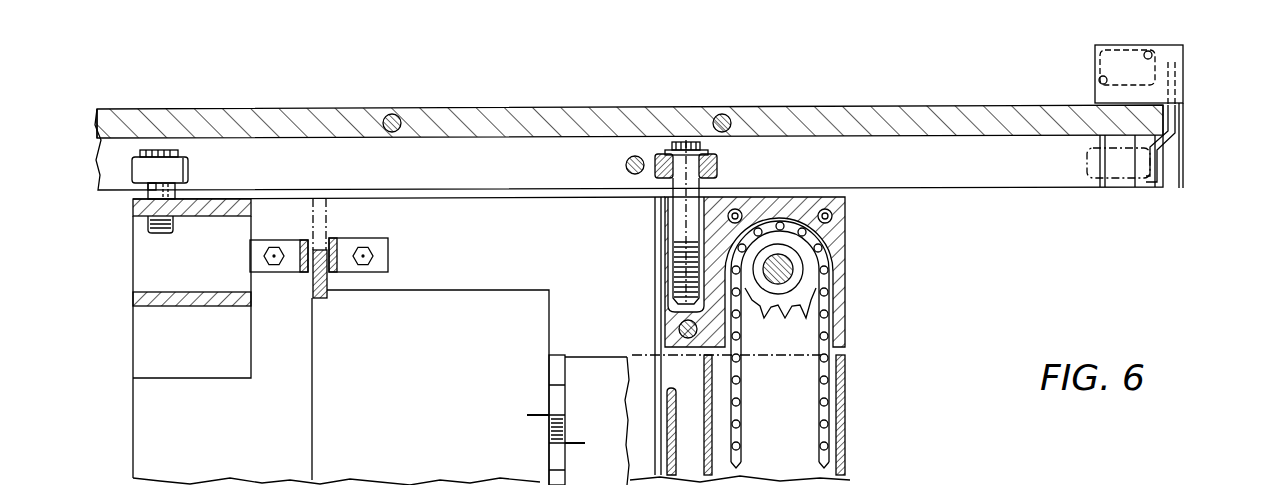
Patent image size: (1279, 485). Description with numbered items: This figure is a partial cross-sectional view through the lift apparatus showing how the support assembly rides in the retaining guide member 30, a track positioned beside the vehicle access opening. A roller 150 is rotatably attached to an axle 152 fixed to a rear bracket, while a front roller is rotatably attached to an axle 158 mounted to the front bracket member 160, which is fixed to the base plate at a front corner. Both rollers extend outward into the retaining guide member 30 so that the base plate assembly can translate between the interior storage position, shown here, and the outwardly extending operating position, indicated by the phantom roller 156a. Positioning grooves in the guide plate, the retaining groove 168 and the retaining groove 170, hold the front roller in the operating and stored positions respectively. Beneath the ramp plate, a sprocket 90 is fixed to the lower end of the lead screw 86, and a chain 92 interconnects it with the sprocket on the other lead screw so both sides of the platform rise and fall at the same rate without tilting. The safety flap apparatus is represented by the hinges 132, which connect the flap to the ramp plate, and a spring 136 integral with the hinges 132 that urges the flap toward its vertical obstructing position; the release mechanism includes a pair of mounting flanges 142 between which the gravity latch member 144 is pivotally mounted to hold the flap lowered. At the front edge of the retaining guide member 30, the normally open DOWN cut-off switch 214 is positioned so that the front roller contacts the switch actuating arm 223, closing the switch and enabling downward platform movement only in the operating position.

The retaining guide member 30 is at (606, 108).
The roller 150 is at (177, 172).
The axle 152 is at (148, 190).
The mounting flanges 142 is at (252, 252).
The gravity latch member 144 is at (320, 300).
The hinges 132 is at (549, 370).
The spring 136 is at (549, 432).
The axle 158 is at (680, 211).
The retaining groove 170 is at (697, 144).
The front bracket member 160 is at (842, 200).
The lead screw 86 is at (790, 270).
The sprocket 90 is at (806, 297).
The chain 92 is at (830, 352).
The retaining groove 168 is at (1118, 143).
The switch actuating arm 223 is at (1153, 166).
The phantom roller 156a is at (1122, 172).
The DOWN cut-off switch 214 is at (1162, 57).